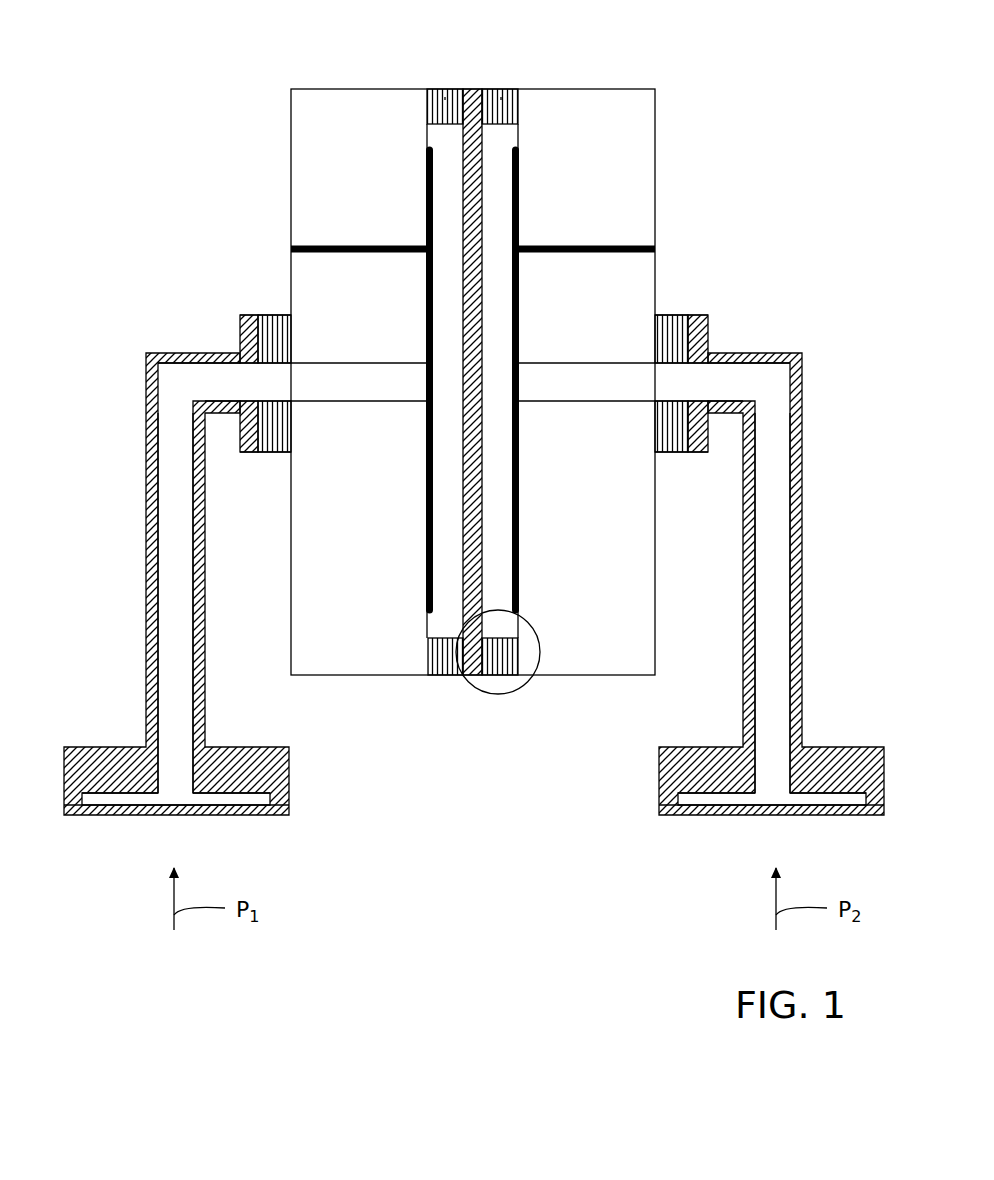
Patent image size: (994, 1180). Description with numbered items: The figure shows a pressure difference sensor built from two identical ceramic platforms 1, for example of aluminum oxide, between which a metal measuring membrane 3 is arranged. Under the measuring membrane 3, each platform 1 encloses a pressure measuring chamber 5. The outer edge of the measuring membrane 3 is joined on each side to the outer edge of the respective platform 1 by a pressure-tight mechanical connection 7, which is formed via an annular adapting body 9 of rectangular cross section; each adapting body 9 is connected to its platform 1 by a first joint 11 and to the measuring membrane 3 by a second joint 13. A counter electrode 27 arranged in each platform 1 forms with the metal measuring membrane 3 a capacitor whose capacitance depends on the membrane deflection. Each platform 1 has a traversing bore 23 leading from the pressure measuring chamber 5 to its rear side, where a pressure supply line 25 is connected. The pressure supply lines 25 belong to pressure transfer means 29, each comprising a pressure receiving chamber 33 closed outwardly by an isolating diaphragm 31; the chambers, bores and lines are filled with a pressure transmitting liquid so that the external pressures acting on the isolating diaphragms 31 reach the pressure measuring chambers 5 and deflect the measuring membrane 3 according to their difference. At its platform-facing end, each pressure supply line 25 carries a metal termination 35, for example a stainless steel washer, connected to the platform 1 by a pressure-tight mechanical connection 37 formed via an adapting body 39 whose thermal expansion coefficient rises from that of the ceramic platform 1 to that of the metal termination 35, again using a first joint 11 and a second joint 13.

The ceramic platform 1 is at (363, 532).
The measuring membrane 3 is at (473, 92).
The pressure measuring chamber 5 is at (455, 449).
The pressure-tight mechanical connection 7 is at (464, 700).
The adapting body 9 is at (445, 97).
The first joint 11 is at (423, 110).
The second joint 13 is at (459, 92).
The traversing bore 23 is at (372, 395).
The pressure supply line 25 is at (150, 462).
The counter electrode 27 is at (427, 195).
The pressure transfer means 29 is at (125, 592).
The isolating diaphragm 31 is at (233, 810).
The pressure receiving chamber 33 is at (113, 800).
The termination 35 is at (240, 333).
The pressure-tight mechanical connection 37 is at (291, 461).
The adapting body 39 is at (266, 314).